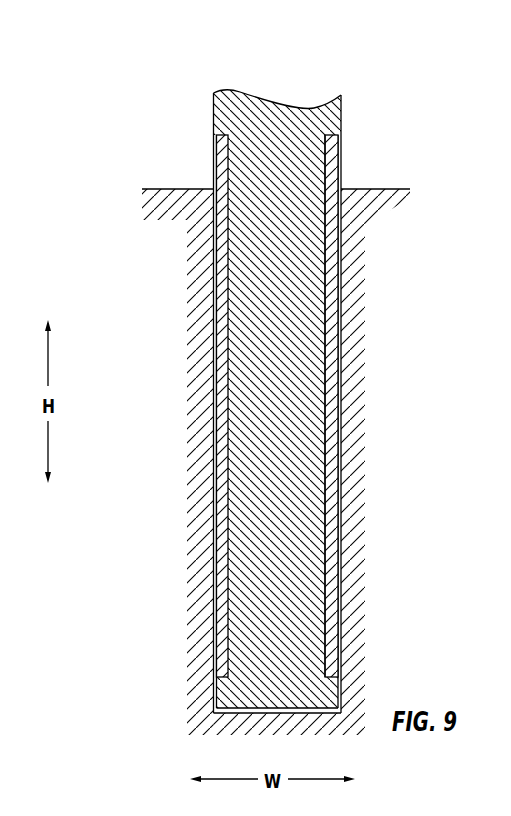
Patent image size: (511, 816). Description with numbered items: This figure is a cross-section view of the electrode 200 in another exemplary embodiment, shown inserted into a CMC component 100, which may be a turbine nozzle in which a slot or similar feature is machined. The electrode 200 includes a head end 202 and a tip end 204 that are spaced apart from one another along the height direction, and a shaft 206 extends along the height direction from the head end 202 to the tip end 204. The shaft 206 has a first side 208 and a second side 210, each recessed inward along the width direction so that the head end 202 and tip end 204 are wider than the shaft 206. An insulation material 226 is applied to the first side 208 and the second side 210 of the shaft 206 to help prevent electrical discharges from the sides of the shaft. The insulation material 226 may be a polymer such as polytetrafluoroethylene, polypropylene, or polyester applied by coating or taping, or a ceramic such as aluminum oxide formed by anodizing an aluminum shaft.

The CMC component 100 is at (173, 202).
The electrode 200 is at (285, 91).
The head end 202 is at (323, 118).
The tip end 204 is at (233, 692).
The shaft 206 is at (292, 393).
The first side 208 is at (228, 377).
The second side 210 is at (325, 318).
The insulation material 226 is at (332, 172).